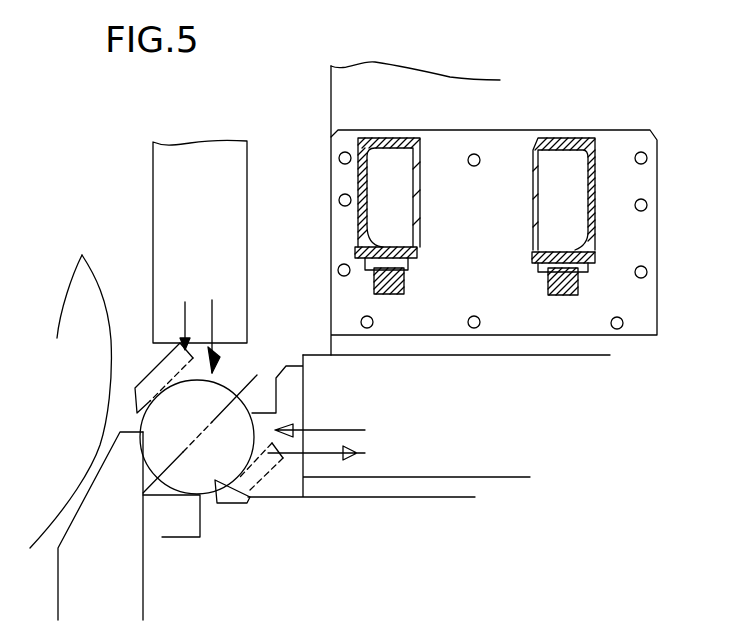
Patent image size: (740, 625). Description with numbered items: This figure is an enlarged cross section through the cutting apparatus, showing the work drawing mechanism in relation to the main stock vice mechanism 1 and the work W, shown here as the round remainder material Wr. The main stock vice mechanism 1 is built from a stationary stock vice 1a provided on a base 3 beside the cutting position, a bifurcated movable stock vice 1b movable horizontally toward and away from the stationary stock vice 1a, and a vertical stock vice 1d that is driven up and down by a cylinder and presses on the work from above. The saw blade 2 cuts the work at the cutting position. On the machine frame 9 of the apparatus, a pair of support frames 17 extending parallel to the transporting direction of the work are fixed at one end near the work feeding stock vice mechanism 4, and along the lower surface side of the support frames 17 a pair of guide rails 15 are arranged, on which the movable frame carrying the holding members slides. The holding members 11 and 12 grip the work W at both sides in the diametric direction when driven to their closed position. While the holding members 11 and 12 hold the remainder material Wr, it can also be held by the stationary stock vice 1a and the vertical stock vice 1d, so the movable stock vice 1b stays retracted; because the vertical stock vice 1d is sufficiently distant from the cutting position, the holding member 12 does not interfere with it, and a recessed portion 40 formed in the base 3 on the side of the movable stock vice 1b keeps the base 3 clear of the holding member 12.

The main stock vice mechanism 1 is at (282, 328).
The stationary stock vice 1a is at (120, 460).
The movable stock vice 1b is at (285, 405).
The vertical stock vice 1d is at (215, 235).
The saw blade 2 is at (85, 285).
The base 3 is at (162, 513).
The work feeding stock vice mechanism 4 is at (198, 326).
The machine frame 9 is at (308, 100).
The holding member 11 is at (153, 370).
The holding member 12 is at (252, 500).
The guide rail 15 is at (383, 272).
The support frame 17 is at (378, 140).
The recessed portion 40 is at (213, 520).
The work W is at (228, 477).